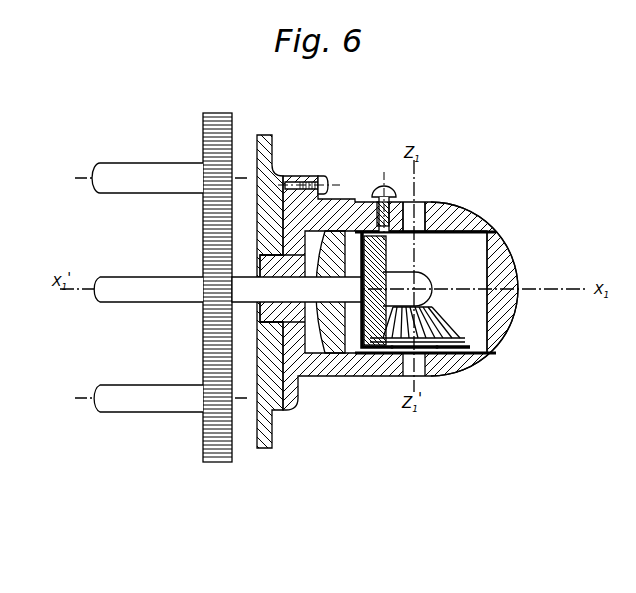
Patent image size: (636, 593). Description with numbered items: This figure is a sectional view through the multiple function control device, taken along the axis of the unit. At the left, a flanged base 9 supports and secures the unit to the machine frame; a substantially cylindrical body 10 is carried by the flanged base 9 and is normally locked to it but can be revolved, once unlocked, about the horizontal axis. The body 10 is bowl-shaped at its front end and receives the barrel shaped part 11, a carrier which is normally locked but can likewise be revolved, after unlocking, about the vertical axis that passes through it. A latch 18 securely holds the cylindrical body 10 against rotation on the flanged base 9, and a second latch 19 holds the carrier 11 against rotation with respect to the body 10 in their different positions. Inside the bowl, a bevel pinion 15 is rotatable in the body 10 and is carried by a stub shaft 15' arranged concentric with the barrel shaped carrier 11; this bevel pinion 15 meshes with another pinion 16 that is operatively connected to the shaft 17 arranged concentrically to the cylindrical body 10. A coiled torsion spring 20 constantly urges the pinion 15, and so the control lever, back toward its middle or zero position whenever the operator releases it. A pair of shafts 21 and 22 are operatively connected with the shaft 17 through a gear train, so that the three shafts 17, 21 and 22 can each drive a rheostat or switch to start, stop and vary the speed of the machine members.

The flanged base 9 is at (264, 135).
The cylindrical body 10 is at (348, 199).
The barrel shaped part 11 is at (511, 247).
The bevel pinion 15 is at (416, 289).
The stub shaft 15' is at (442, 201).
The pinion 16 is at (396, 257).
The shaft 17 is at (167, 300).
The latch 18 is at (321, 182).
The latch 19 is at (389, 190).
The coiled torsion spring 20 is at (437, 350).
The shaft 21 is at (134, 176).
The shaft 22 is at (152, 410).